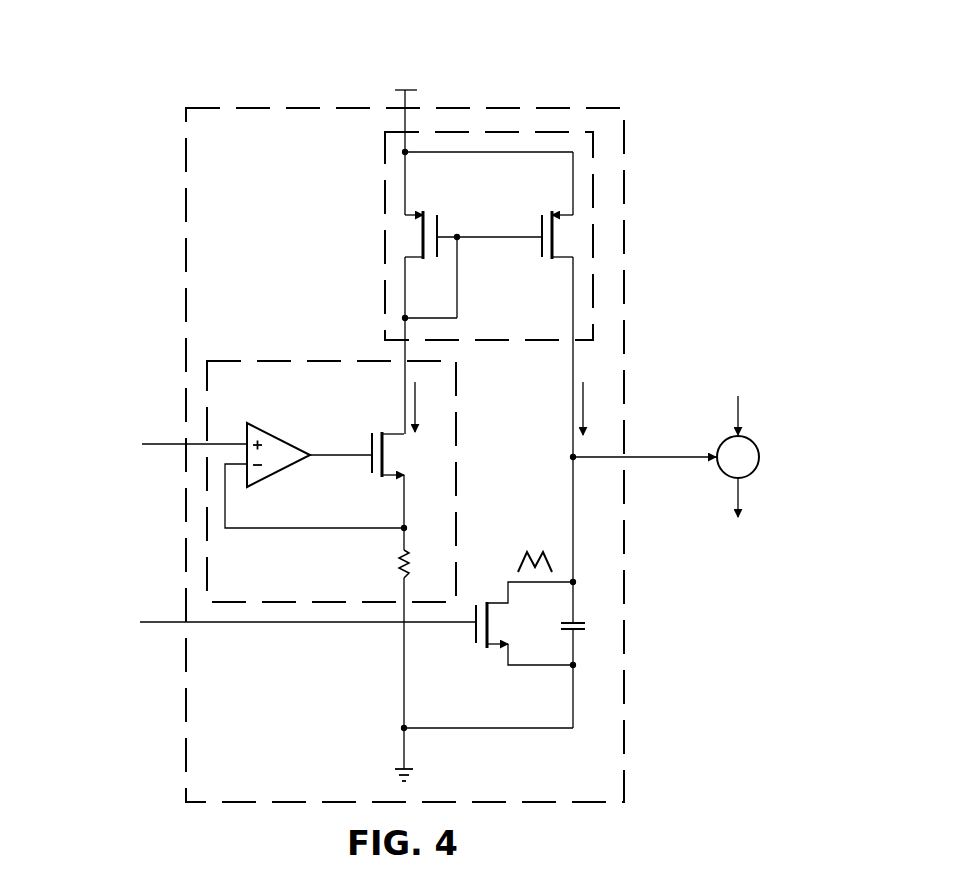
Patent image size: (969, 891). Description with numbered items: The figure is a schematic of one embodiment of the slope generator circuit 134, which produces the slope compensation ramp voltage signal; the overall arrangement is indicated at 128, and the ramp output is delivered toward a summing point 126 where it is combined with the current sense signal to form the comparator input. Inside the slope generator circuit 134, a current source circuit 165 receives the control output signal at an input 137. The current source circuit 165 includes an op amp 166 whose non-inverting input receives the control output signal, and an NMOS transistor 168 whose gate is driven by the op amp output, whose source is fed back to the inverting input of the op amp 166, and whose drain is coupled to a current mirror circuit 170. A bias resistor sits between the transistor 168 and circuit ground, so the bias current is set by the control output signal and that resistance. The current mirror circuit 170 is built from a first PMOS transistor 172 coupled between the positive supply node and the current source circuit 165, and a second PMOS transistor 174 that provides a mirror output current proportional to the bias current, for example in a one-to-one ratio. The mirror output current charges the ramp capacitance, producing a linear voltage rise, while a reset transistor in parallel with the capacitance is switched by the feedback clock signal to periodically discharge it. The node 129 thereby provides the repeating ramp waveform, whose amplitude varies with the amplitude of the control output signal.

The slope compensation circuit 128 is at (160, 54).
The slope generator circuit 134 is at (304, 226).
The current mirror circuit 170 is at (383, 283).
The first PMOS transistor 172 is at (438, 226).
The second mirror transistor 174 is at (538, 249).
The current source circuit 165 is at (281, 357).
The op amp 166 is at (278, 437).
The NMOS transistor 168 is at (371, 470).
The input 137 is at (166, 443).
The node 129 is at (666, 460).
The summing node 126 is at (755, 472).